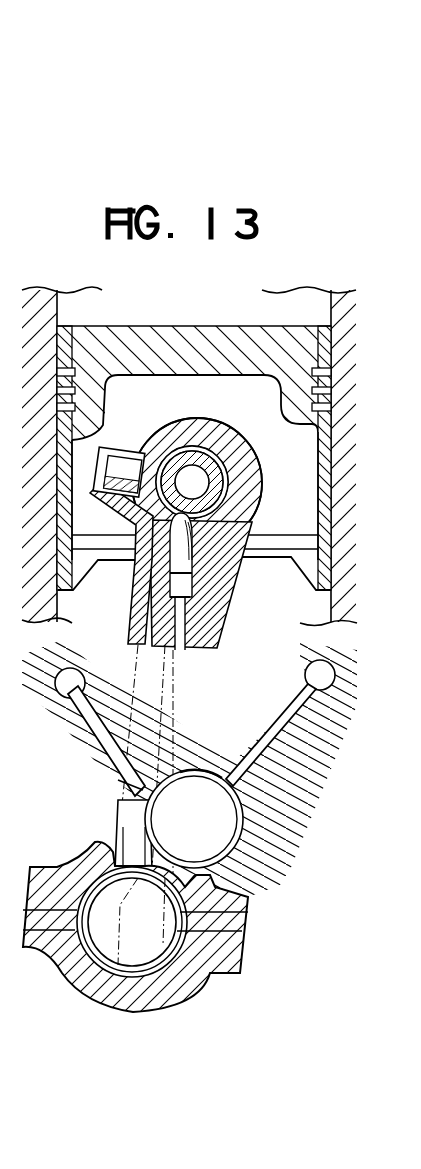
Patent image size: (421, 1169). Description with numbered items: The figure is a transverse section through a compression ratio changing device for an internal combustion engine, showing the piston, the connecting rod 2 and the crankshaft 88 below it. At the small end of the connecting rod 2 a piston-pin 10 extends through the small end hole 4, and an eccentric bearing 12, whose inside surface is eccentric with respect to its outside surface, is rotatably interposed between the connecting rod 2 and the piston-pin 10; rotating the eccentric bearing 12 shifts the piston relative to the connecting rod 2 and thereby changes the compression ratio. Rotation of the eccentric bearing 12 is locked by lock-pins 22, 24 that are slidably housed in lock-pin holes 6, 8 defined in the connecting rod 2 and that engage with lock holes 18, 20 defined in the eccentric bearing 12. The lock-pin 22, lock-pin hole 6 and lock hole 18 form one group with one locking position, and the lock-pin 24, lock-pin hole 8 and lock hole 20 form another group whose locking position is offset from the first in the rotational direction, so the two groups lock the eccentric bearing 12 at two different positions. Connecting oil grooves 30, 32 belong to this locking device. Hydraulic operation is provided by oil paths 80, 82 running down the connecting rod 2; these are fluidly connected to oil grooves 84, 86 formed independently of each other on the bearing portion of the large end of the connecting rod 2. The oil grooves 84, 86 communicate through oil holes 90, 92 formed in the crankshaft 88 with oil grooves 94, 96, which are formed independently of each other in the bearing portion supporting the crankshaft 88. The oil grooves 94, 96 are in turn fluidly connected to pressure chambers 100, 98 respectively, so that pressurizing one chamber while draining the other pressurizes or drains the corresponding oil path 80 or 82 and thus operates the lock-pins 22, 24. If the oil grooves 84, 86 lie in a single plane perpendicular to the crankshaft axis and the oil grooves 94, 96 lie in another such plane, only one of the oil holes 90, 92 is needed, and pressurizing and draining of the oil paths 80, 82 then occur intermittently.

The connecting rod 2 is at (198, 645).
The small end hole 4 is at (176, 432).
The lock-pin hole 6 is at (178, 597).
The lock-pin hole 8 is at (126, 455).
The piston-pin 10 is at (233, 436).
The eccentric bearing 12 is at (213, 523).
The lock hole 18 is at (200, 557).
The lock hole 20 is at (243, 488).
The lock-pin 22 is at (190, 578).
The lock-pin 24 is at (108, 476).
The connecting oil groove 30 is at (118, 538).
The connecting oil groove 32 is at (233, 503).
The oil path 80 is at (175, 632).
The oil path 82 is at (137, 622).
The oil groove 84 is at (178, 958).
The oil groove 86 is at (100, 893).
The crankshaft 88 is at (153, 975).
The oil hole 90 is at (173, 912).
The oil hole 92 is at (117, 937).
The oil groove 94 is at (135, 787).
The oil groove 96 is at (244, 806).
The pressure chamber 98 is at (56, 674).
The pressure chamber 100 is at (308, 700).